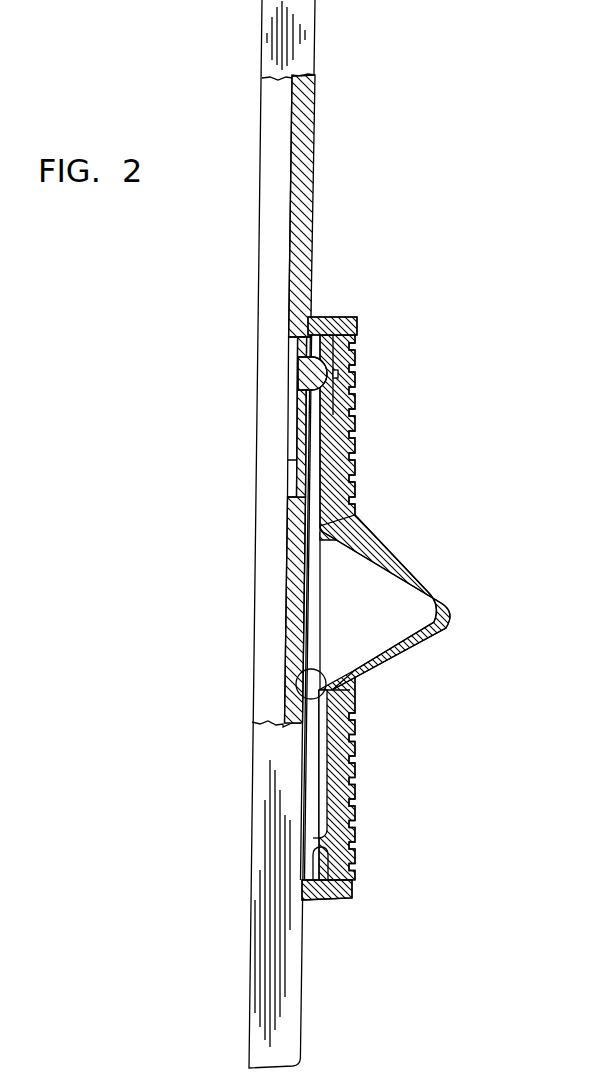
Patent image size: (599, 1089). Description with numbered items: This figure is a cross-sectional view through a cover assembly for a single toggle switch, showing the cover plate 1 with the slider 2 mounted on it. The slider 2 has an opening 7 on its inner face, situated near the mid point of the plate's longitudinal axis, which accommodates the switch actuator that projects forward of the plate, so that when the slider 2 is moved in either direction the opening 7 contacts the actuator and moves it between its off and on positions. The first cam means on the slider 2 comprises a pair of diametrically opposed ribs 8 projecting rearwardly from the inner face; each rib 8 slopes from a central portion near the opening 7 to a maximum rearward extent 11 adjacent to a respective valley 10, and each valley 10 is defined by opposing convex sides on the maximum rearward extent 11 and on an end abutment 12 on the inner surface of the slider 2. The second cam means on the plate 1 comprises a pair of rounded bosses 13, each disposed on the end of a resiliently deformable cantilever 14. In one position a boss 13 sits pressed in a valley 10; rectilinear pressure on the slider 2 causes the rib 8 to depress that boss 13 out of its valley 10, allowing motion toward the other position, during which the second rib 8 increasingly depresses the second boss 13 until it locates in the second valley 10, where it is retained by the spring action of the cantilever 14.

The cover plate 1 is at (318, 970).
The slider 2 is at (420, 668).
The opening 7 is at (380, 610).
The rib 8 is at (347, 424).
The valley 10 is at (343, 375).
The maximum rearward extent 11 is at (317, 413).
The end abutment 12 is at (345, 346).
The rounded boss 13 is at (300, 376).
The resiliently deformable cantilever 14 is at (298, 461).